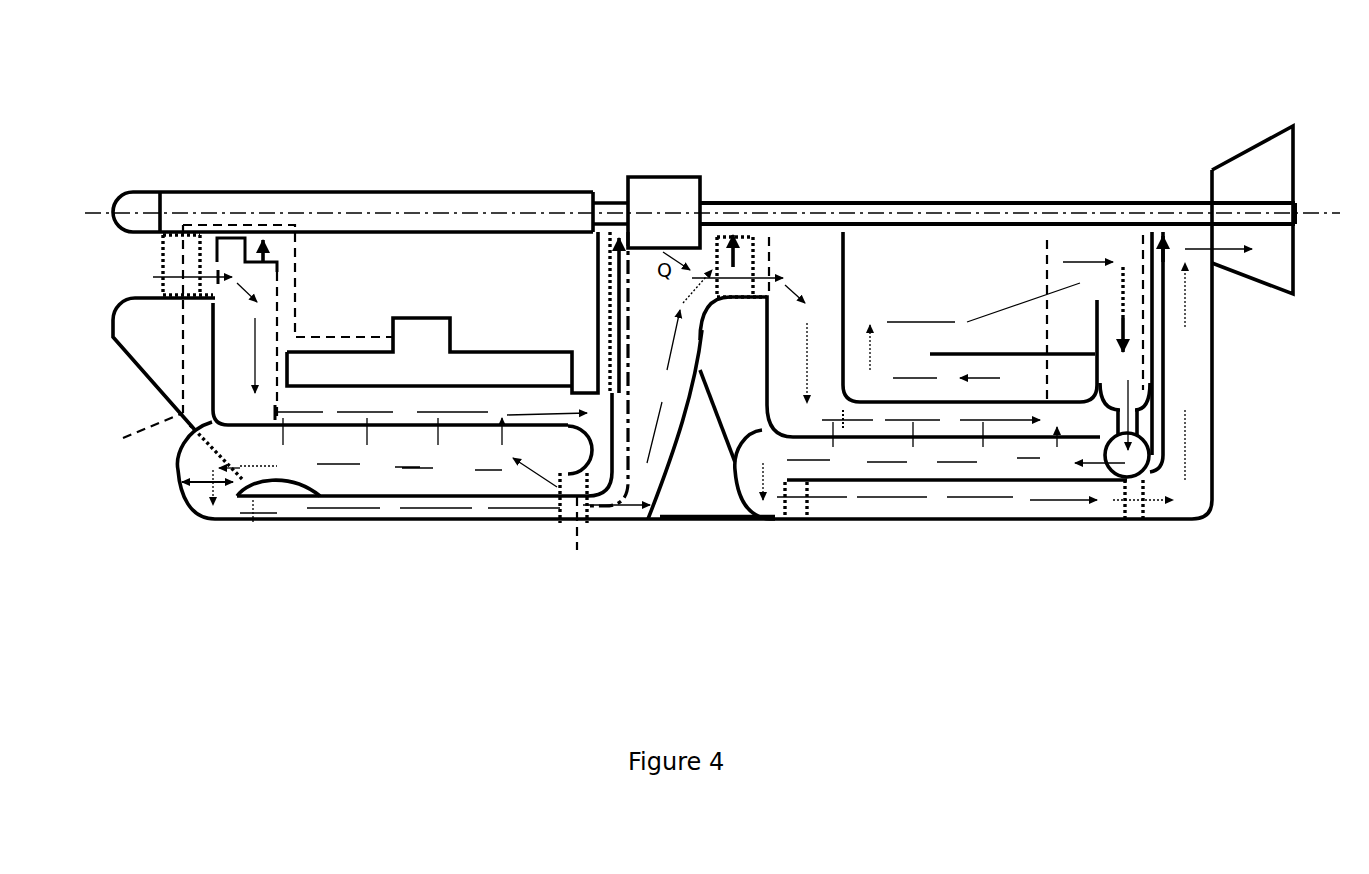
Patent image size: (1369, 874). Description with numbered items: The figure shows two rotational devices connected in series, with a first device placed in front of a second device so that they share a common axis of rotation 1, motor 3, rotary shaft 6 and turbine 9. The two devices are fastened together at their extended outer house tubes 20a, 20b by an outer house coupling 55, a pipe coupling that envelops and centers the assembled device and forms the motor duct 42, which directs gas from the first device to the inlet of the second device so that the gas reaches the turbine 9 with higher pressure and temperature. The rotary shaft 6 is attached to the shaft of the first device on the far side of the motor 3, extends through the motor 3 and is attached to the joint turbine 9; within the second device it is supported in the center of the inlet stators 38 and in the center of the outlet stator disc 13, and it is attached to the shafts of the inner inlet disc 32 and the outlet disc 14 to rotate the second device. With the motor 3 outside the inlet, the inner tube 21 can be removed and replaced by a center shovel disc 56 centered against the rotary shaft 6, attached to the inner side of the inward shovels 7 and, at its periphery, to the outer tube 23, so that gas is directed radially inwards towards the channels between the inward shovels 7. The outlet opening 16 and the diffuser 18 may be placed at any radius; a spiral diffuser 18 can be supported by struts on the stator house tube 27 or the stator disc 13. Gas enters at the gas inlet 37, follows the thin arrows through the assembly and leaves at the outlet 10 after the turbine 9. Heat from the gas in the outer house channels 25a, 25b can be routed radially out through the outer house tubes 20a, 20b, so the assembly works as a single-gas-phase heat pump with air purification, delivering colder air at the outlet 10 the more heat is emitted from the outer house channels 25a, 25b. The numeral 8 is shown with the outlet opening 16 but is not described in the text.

The axis of rotation 1 is at (700, 216).
The motor 3 is at (668, 203).
The rotary shaft 6 is at (732, 200).
The inward shovels 7 is at (1062, 320).
The nozzle 8 is at (1122, 395).
The outlet opening 16 is at (1127, 415).
The turbine 9 is at (1240, 157).
The outlet 10 is at (1265, 250).
The outlet stator disc 13 is at (1165, 320).
The outlet disc 14 is at (1152, 350).
The diffuser 18 is at (1130, 455).
The outer house tube 20a is at (355, 519).
The outer house tube 20b is at (893, 520).
The inner tube 21 is at (947, 353).
The outer tube 23 is at (1022, 385).
The outer house channel 25a is at (483, 512).
The outer house channel 25b is at (970, 505).
The stator house tube 27 is at (1105, 478).
The inner inlet disc 32 is at (842, 287).
The gas inlet 37 is at (148, 277).
The inlet stators 38 is at (740, 262).
The motor duct 42 is at (680, 460).
The outer house coupling 55 is at (677, 520).
The center shovel disc 56 is at (1048, 270).